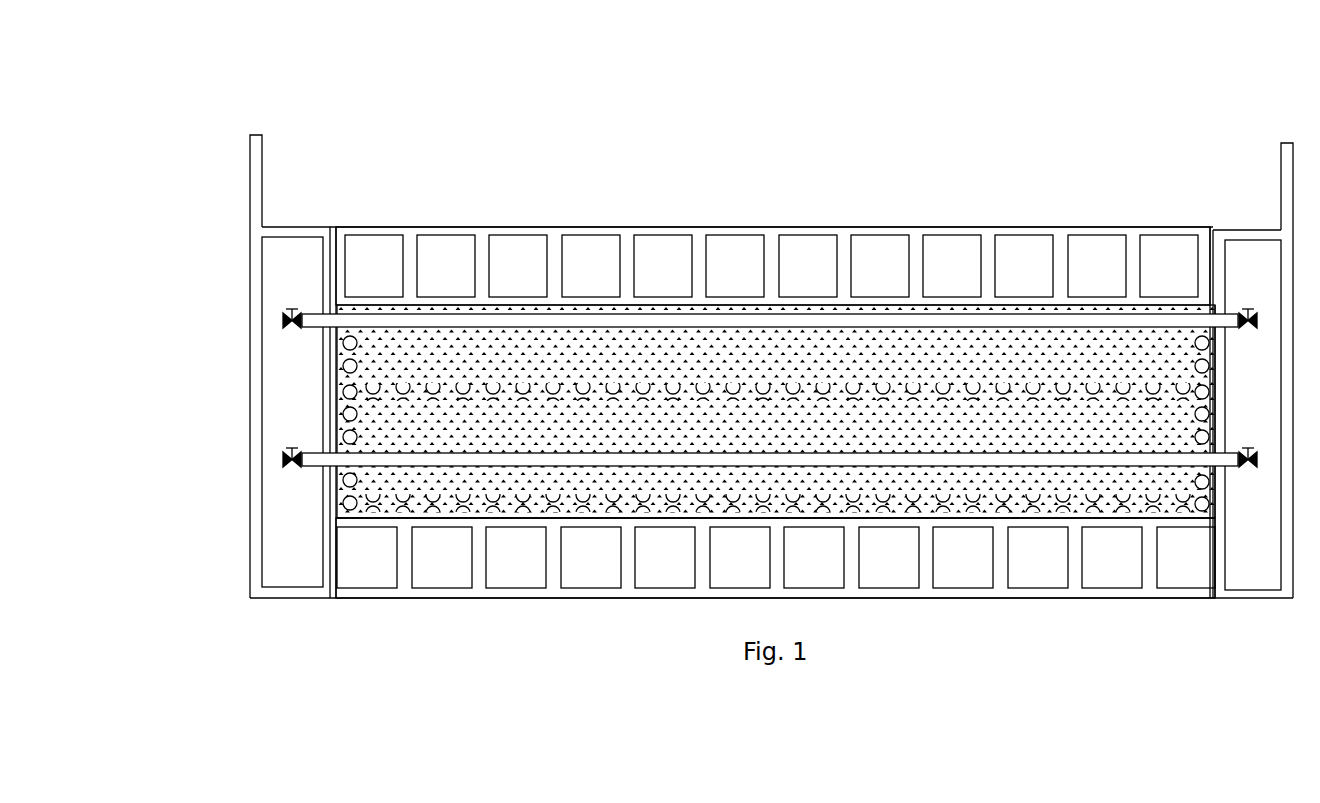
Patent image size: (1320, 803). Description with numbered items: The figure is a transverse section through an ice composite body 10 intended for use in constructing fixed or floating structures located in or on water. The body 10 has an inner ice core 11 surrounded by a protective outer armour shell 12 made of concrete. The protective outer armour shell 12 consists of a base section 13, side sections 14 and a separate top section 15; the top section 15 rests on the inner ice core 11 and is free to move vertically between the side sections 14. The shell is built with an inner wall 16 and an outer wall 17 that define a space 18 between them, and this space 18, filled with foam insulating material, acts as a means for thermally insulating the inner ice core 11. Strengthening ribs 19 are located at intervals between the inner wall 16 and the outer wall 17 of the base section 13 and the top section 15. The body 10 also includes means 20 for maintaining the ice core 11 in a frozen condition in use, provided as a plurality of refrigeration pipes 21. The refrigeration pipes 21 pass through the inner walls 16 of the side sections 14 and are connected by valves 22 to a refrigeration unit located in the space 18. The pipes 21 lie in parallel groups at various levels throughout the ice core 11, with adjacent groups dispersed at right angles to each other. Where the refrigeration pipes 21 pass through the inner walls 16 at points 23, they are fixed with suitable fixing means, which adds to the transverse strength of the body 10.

The ice composite body 10 is at (314, 120).
The inner ice core 11 is at (575, 428).
The protective outer armour shell 12 is at (438, 590).
The base section 13 is at (890, 593).
The side section 14 is at (250, 300).
The top section 15 is at (680, 235).
The inner wall 16 is at (335, 245).
The outer wall 17 is at (250, 590).
The space 18 is at (300, 572).
The strengthening rib 19 is at (487, 270).
The means for maintaining the ice core in a frozen condition 20 is at (975, 393).
The refrigeration pipe 21 is at (822, 510).
The valve 22 is at (296, 447).
The point 23 is at (318, 308).